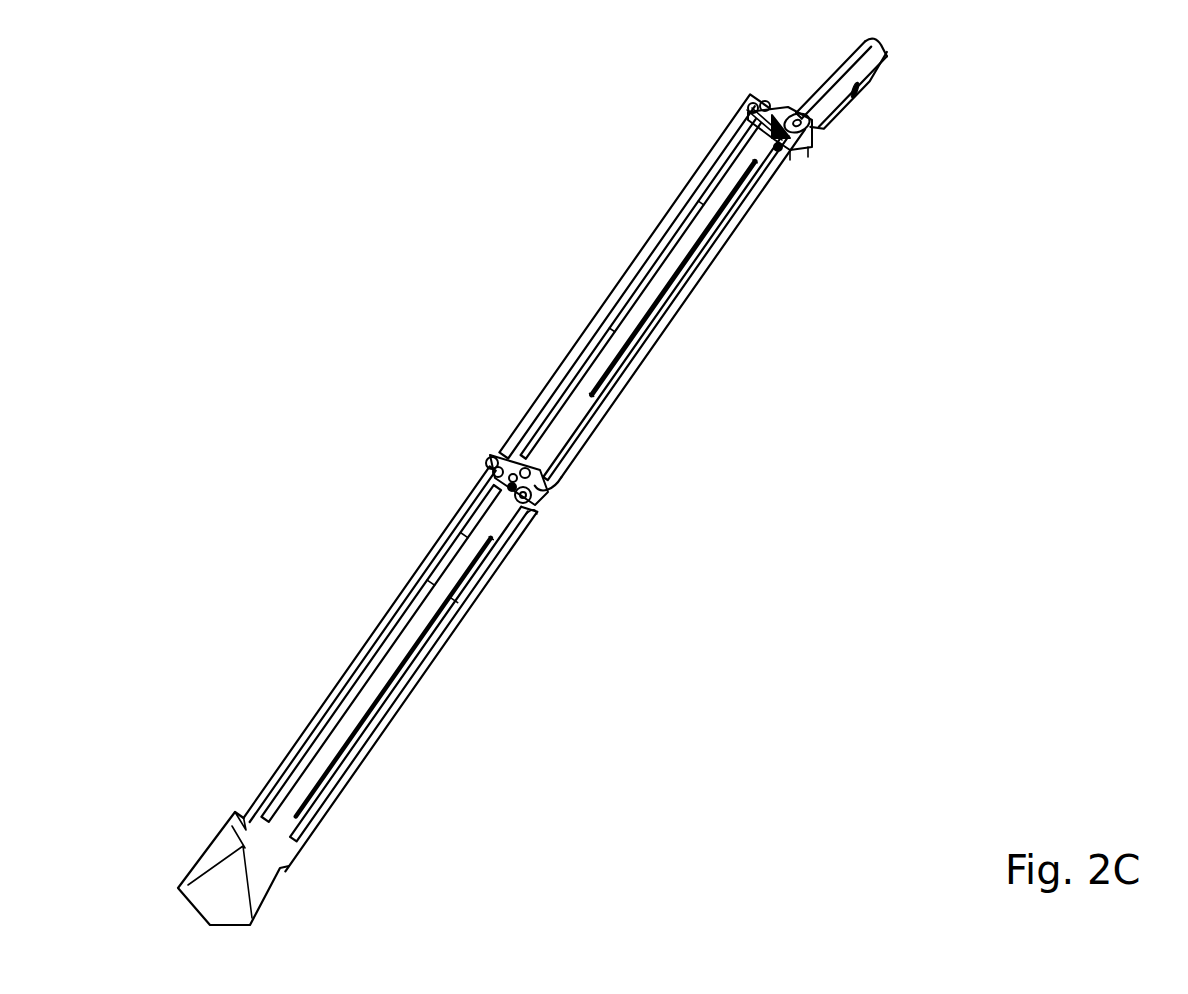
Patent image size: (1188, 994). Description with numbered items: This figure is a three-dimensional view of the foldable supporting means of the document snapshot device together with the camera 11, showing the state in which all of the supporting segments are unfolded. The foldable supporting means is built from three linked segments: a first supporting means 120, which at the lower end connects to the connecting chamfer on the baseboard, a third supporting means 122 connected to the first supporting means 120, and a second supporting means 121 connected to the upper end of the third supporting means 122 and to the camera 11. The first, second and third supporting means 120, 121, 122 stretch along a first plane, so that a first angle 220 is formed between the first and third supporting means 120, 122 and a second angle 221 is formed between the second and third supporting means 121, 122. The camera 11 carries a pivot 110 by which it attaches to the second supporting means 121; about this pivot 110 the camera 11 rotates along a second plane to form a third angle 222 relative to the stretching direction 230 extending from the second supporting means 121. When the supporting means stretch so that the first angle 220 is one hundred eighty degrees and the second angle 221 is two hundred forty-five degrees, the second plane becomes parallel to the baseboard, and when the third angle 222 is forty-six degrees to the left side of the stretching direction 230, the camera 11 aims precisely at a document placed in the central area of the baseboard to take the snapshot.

The camera 11 is at (878, 43).
The pivot 110 is at (812, 155).
The second supporting means 121 is at (790, 160).
The third supporting means 122 is at (612, 292).
The first supporting means 120 is at (348, 790).
The first angle 220 is at (504, 432).
The second angle 221 is at (784, 95).
The third angle 222 is at (876, 83).
The stretching direction 230 is at (832, 127).